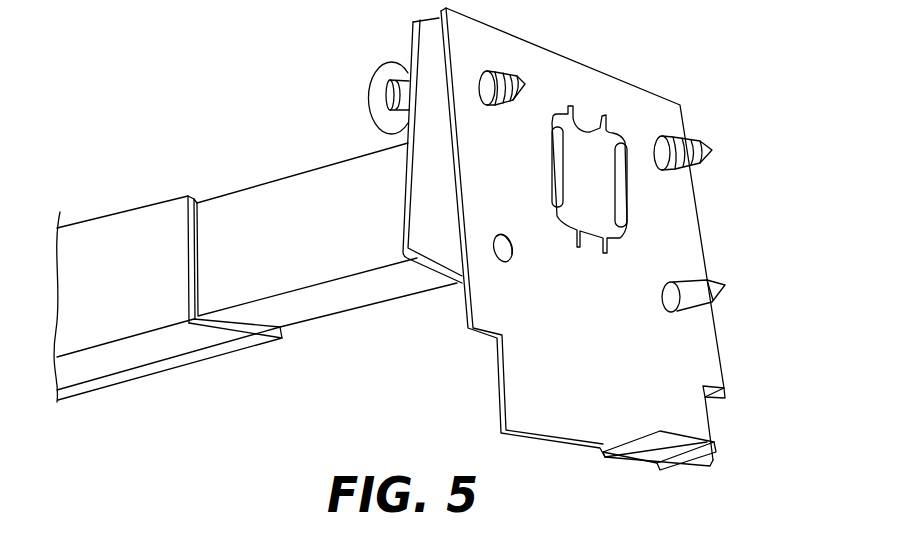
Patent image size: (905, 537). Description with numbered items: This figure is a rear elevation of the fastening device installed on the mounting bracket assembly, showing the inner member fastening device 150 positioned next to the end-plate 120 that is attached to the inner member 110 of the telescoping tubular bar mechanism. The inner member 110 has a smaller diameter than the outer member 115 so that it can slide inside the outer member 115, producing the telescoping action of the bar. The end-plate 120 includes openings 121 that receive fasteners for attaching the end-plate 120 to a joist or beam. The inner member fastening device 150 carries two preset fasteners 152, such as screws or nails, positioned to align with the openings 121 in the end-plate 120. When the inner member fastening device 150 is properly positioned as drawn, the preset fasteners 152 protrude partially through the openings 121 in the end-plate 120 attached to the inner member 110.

The inner member 110 is at (353, 312).
The outer member 115 is at (180, 367).
The end-plate 120 is at (702, 228).
The openings 121 is at (496, 104).
The inner member fastening device 150 is at (412, 53).
The preset fasteners 152 is at (526, 80).